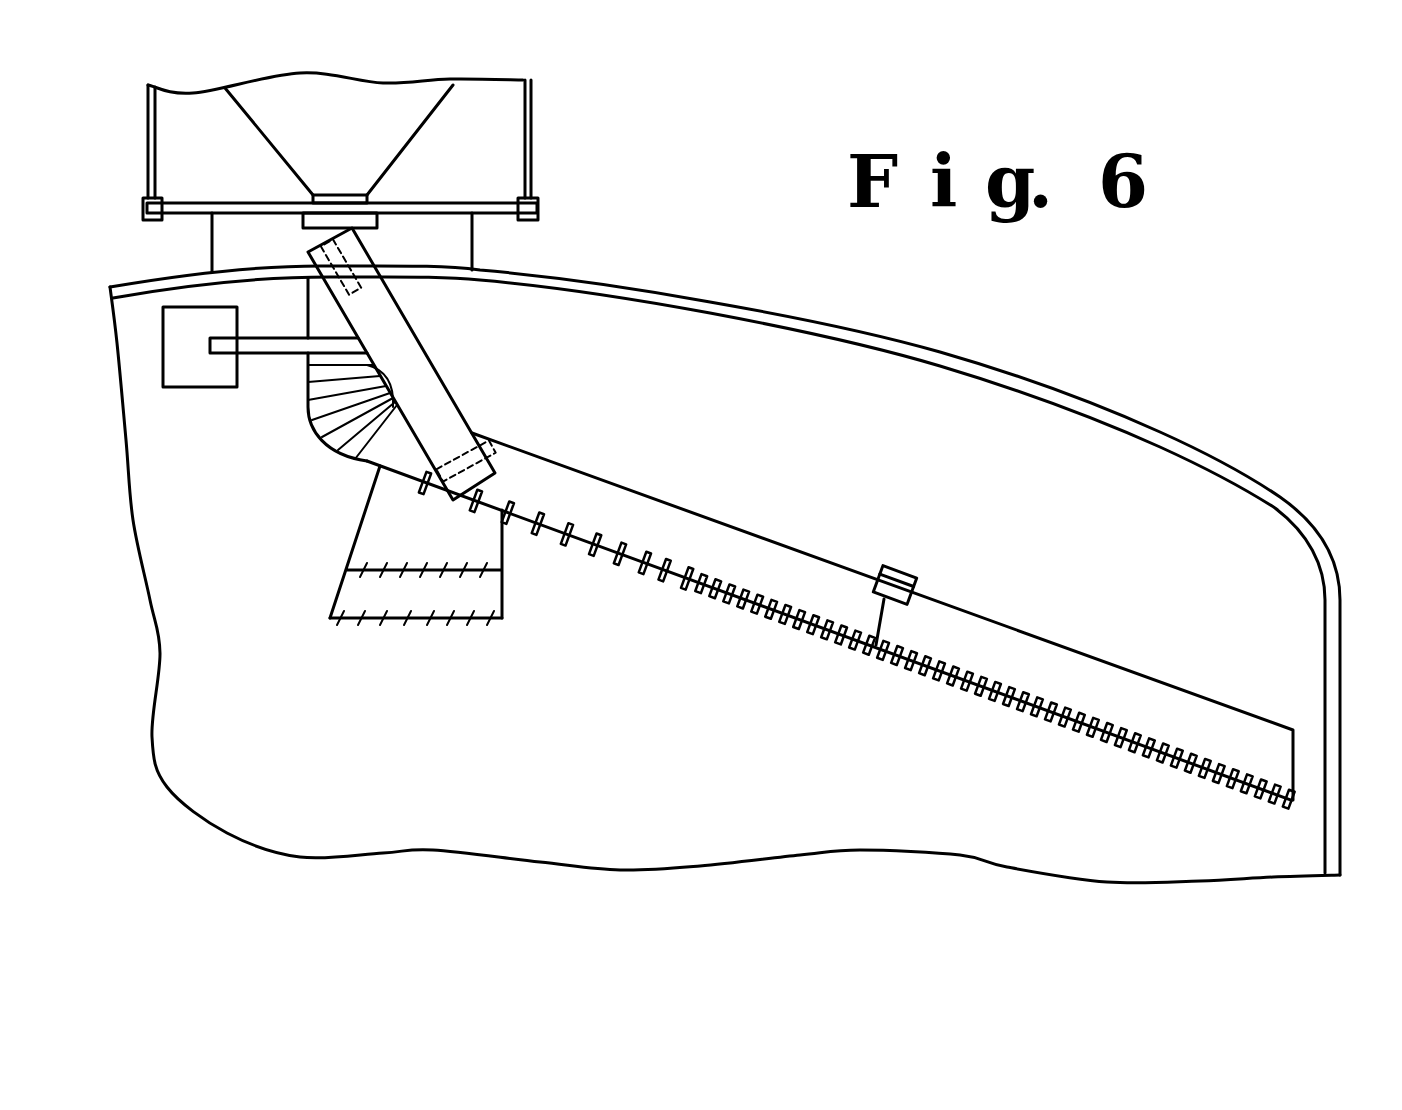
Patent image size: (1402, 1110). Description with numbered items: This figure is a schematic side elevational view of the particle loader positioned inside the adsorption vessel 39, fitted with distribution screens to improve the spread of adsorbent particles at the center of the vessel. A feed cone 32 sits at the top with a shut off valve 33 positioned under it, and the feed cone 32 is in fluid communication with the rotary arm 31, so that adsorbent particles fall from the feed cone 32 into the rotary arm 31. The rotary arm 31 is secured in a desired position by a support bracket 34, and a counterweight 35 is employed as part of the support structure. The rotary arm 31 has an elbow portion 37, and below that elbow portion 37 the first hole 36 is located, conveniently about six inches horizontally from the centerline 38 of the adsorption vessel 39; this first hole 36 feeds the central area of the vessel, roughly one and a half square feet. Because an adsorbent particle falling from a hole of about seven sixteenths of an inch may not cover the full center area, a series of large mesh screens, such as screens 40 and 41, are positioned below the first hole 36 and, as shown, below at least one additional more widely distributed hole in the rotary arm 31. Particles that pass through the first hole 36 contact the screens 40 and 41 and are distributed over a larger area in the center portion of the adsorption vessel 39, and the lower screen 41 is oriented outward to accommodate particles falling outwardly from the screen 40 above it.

The rotary arm 31 is at (610, 482).
The feed cone 32 is at (408, 145).
The shut off valve 33 is at (390, 228).
The support bracket 34 is at (433, 377).
The counterweight 35 is at (213, 387).
The first hole 36 is at (426, 488).
The elbow portion 37 is at (307, 408).
The centerline 38 is at (342, 113).
The adsorption vessel 39 is at (1160, 433).
The distribution screen 40 is at (333, 572).
The distribution screen 41 is at (320, 618).